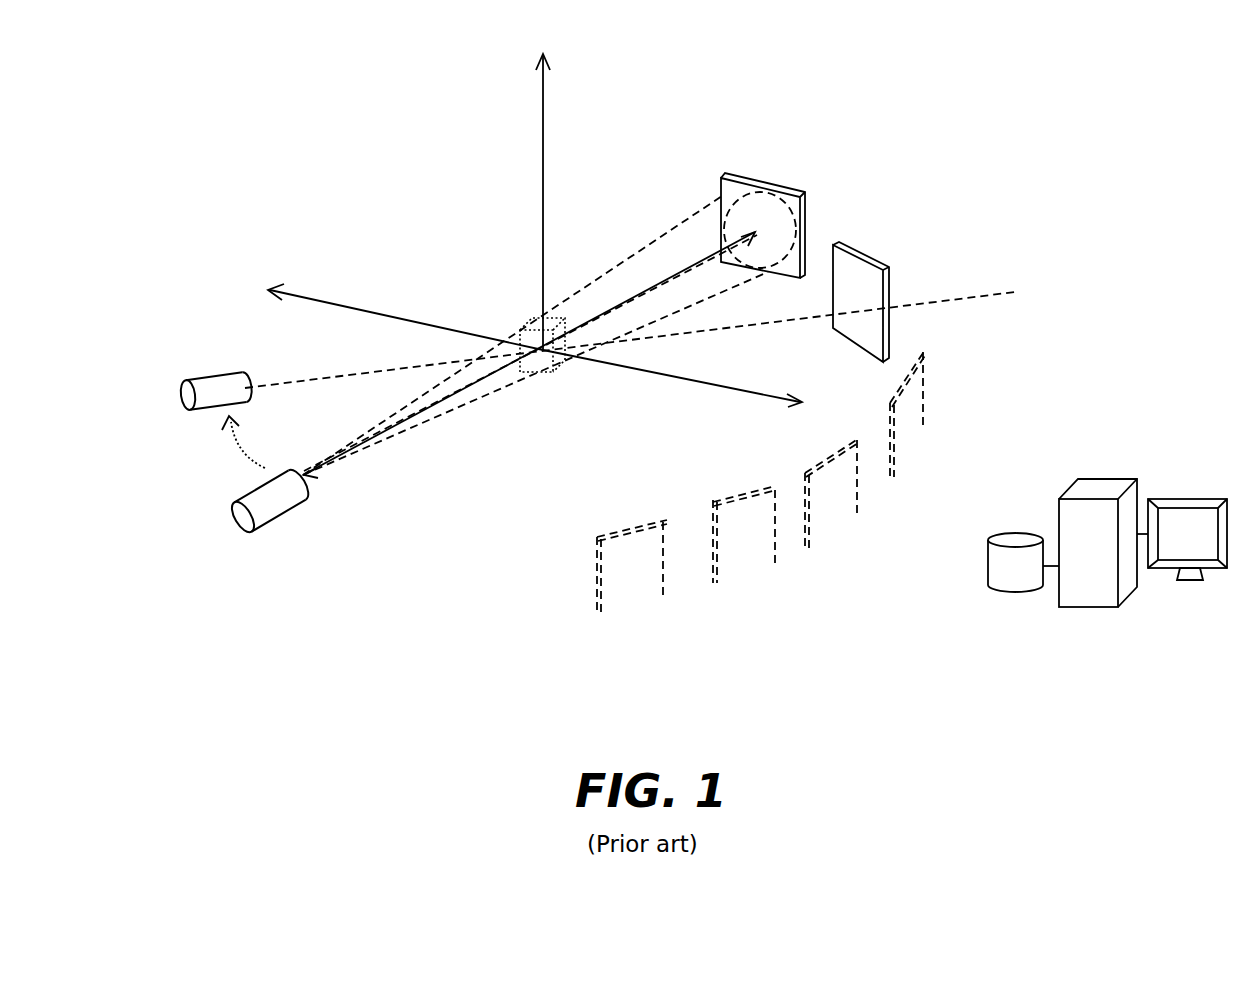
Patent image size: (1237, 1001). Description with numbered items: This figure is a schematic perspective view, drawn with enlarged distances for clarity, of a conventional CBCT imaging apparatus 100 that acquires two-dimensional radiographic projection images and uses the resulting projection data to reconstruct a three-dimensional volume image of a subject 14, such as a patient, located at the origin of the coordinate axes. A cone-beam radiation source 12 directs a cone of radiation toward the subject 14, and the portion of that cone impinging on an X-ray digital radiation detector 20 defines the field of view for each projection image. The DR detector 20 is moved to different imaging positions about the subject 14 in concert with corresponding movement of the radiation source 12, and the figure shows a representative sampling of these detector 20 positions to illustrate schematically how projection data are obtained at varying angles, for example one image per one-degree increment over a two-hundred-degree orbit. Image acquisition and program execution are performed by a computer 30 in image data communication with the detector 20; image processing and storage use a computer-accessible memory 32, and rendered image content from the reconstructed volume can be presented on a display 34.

The CBCT imaging apparatus 100 is at (277, 183).
The cone-beam radiation source 12 is at (270, 525).
The subject 14 is at (557, 365).
The DR detector 20 is at (773, 182).
The computer 30 is at (1103, 573).
The computer-accessible memory 32 is at (1031, 580).
The display 34 is at (1198, 549).